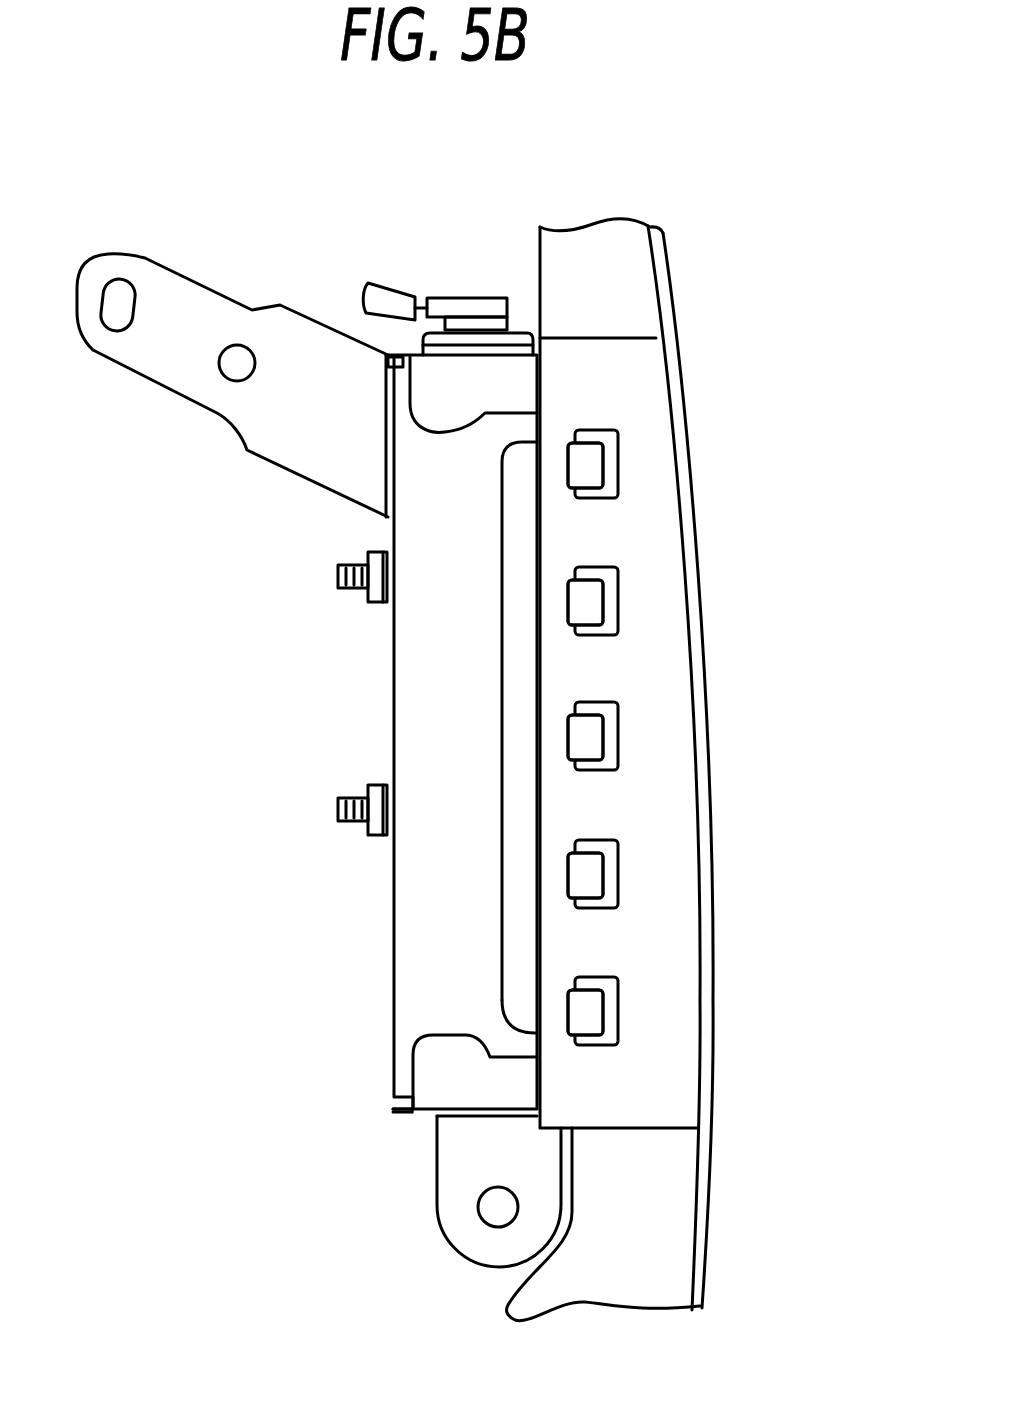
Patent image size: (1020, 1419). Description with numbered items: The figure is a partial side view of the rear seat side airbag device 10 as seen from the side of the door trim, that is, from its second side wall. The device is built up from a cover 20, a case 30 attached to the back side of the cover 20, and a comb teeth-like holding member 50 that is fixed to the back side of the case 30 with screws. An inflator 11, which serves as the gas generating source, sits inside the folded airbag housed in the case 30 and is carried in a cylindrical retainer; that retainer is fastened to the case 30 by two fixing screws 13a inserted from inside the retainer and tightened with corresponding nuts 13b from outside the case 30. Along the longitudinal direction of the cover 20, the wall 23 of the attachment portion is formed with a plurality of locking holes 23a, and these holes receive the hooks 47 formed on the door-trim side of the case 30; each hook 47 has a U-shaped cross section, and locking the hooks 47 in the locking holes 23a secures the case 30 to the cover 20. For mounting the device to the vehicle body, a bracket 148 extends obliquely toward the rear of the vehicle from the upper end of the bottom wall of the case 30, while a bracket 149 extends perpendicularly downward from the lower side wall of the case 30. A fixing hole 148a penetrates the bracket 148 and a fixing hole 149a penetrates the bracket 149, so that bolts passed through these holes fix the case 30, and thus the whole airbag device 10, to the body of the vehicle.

The rear seat side airbag device 10 is at (663, 763).
The inflator 11 is at (521, 330).
The fixing screw 13a is at (338, 578).
The nut 13b is at (372, 602).
The cover 20 is at (716, 988).
The wall 23 is at (553, 730).
The locking hole 23a is at (603, 463).
The case 30 is at (393, 1113).
The hook 47 is at (572, 488).
The holding member 50 is at (394, 963).
The bracket 148 is at (253, 451).
The fixing hole 148a is at (223, 367).
The bracket 149 is at (447, 1188).
The fixing hole 149a is at (488, 1222).